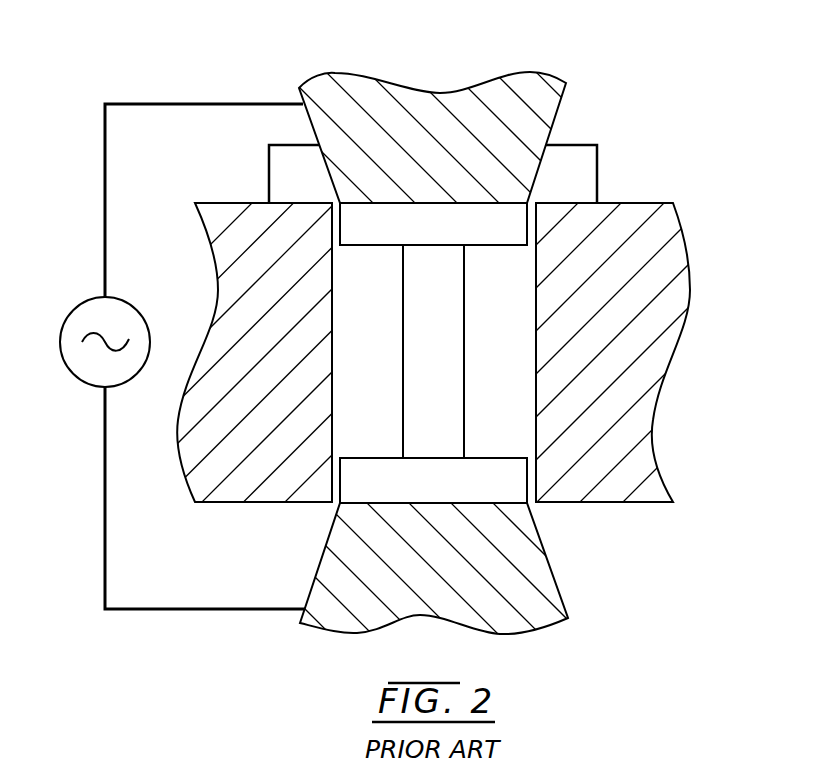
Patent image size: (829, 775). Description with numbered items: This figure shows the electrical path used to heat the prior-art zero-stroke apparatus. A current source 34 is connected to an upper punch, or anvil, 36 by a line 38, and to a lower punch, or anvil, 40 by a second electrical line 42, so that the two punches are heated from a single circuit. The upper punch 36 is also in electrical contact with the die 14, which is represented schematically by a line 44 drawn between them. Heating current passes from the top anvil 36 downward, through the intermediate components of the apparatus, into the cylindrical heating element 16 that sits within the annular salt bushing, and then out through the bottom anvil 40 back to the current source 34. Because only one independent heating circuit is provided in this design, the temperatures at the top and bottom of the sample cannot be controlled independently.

The die 14 is at (688, 260).
The heating element 16 is at (464, 405).
The current source 34 is at (88, 304).
The upper punch 36 is at (522, 74).
The line 38 is at (182, 103).
The lower punch 40 is at (549, 567).
The second electrical line 42 is at (105, 508).
The line 44 is at (269, 172).